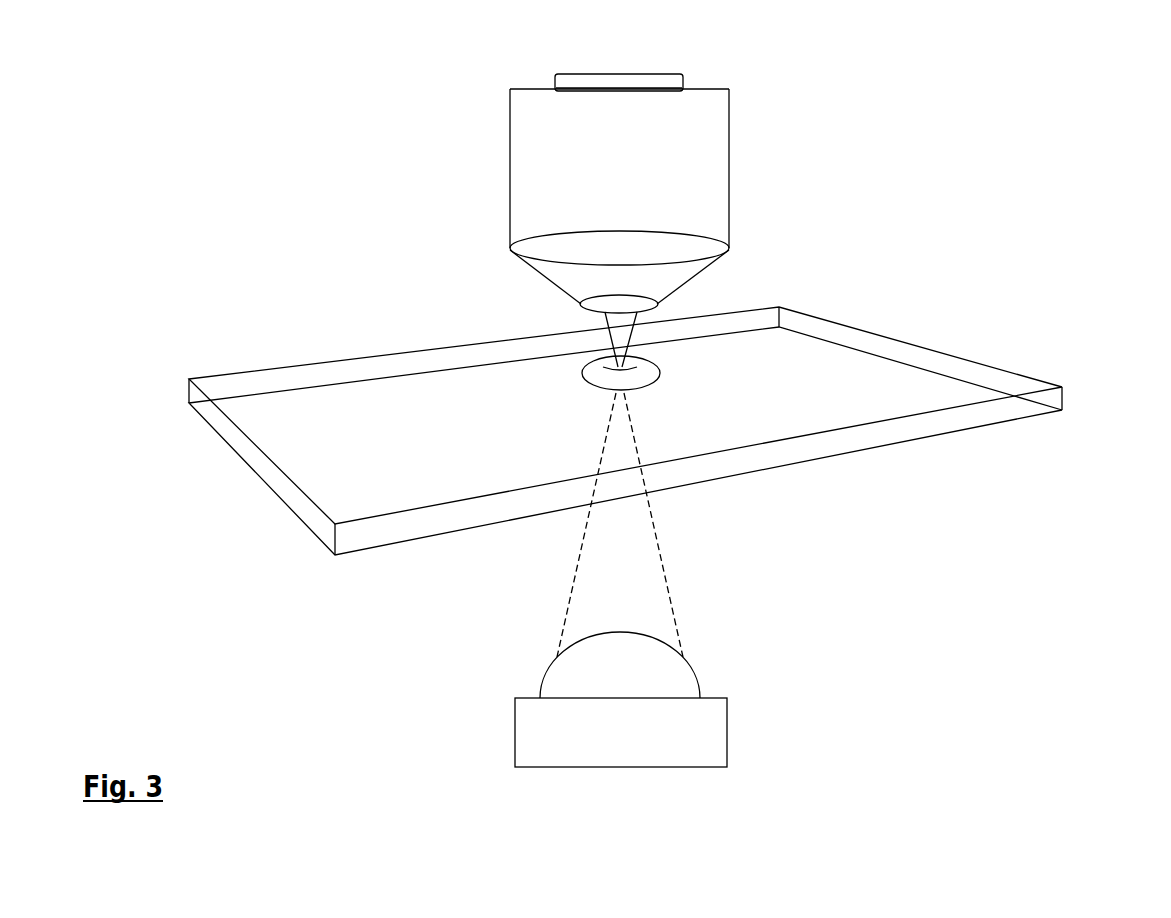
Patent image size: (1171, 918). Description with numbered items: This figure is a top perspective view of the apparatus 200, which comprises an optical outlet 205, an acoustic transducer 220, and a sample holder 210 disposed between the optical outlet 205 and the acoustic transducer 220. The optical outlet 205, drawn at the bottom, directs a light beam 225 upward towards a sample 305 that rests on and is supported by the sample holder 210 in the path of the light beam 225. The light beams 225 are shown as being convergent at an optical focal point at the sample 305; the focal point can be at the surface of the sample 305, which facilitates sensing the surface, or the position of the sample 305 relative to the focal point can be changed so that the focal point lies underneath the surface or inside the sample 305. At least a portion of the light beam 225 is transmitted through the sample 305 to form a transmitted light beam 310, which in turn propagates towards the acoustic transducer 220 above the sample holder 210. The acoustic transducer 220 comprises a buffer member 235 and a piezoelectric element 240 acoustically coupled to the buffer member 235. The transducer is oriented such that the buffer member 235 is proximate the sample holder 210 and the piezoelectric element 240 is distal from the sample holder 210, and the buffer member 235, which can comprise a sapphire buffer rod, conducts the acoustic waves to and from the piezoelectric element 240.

The apparatus 200 is at (1009, 101).
The optical outlet 205 is at (700, 683).
The sample holder 210 is at (985, 363).
The acoustic transducer 220 is at (729, 138).
The light beam 225 is at (674, 615).
The buffer member 235 is at (697, 200).
The piezoelectric element 240 is at (681, 79).
The sample 305 is at (660, 375).
The transmitted light beam 310 is at (607, 316).